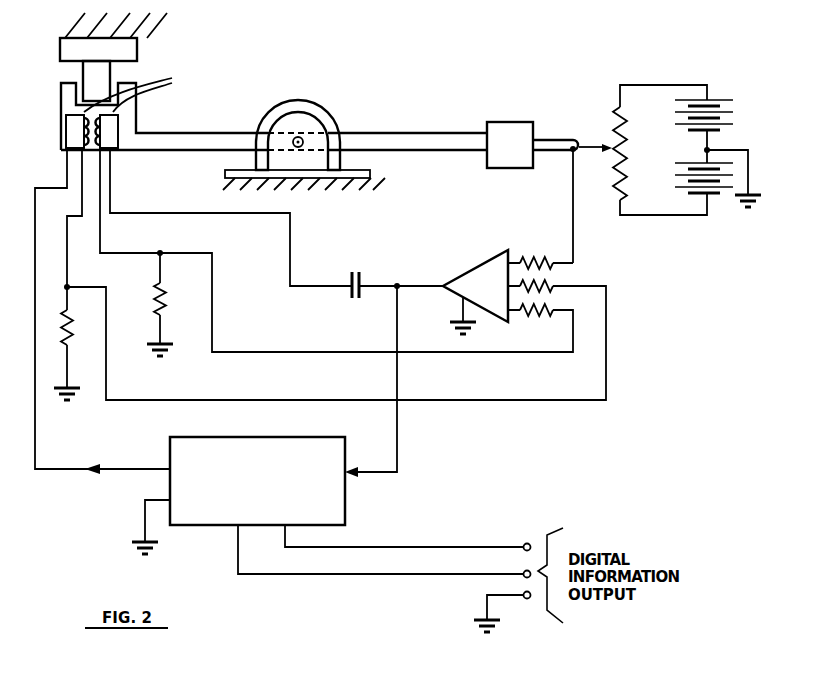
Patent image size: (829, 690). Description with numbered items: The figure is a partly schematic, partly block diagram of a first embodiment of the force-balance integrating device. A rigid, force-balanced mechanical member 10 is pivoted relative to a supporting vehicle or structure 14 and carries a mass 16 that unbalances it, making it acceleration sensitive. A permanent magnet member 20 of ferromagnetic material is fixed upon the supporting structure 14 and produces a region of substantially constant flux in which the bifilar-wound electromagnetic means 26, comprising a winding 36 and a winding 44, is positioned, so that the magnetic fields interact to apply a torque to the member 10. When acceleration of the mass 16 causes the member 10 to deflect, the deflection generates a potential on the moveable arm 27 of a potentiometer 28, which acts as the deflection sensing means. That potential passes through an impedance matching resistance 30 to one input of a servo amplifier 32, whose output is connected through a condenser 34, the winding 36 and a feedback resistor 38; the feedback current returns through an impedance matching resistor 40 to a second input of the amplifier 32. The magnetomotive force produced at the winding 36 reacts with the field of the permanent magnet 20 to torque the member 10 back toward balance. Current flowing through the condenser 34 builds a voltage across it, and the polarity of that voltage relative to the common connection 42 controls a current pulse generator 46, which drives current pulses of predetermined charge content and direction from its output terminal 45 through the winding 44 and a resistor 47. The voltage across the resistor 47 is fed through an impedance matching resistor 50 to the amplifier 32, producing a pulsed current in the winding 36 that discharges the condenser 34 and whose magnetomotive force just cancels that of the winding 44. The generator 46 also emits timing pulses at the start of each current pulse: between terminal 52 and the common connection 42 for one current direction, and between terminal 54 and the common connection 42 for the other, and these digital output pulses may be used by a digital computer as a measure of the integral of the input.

The supporting vehicle or structure 14 is at (140, 33).
The permanent magnet member 20 is at (104, 70).
The winding 36 is at (118, 113).
The winding 44 is at (78, 128).
The electromagnetic means 26 is at (122, 138).
The mechanical member 10 is at (385, 140).
The mass 16 is at (522, 138).
The potentiometer 28 is at (613, 128).
The moveable arm 27 is at (605, 151).
The condenser 34 is at (360, 276).
The servo amplifier 32 is at (488, 290).
The impedance matching resistance 30 is at (537, 260).
The impedance matching resistor 50 is at (547, 290).
The impedance matching resistor 40 is at (550, 313).
The feedback resistor 38 is at (158, 295).
The resistor 47 is at (70, 338).
The output terminal 45 is at (65, 468).
The current pulse generator 46 is at (316, 488).
The common connection 42 is at (487, 605).
The terminal 52 is at (390, 547).
The terminal 54 is at (450, 574).